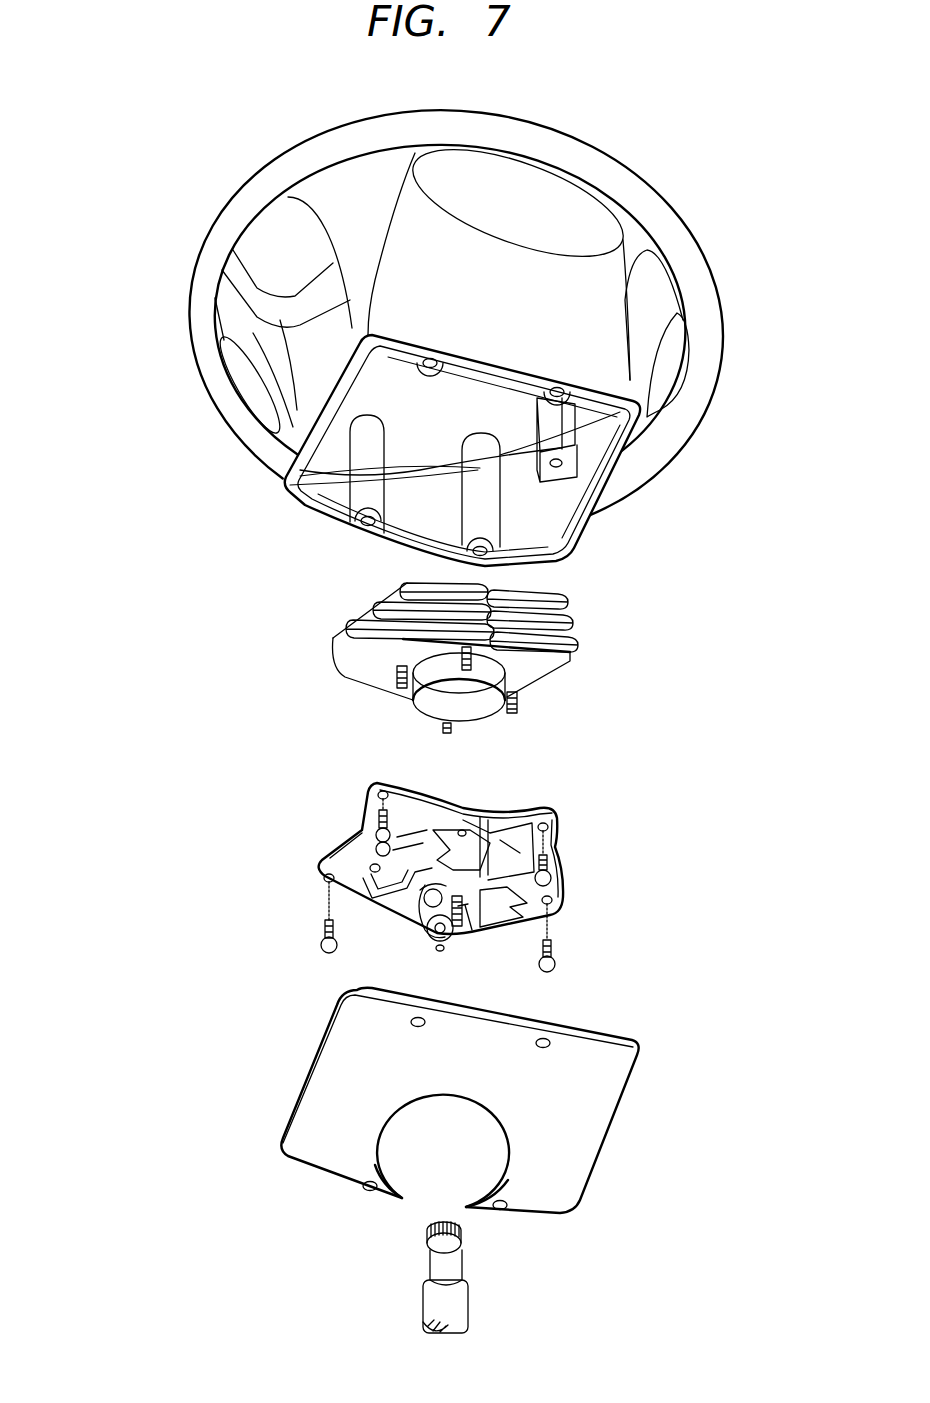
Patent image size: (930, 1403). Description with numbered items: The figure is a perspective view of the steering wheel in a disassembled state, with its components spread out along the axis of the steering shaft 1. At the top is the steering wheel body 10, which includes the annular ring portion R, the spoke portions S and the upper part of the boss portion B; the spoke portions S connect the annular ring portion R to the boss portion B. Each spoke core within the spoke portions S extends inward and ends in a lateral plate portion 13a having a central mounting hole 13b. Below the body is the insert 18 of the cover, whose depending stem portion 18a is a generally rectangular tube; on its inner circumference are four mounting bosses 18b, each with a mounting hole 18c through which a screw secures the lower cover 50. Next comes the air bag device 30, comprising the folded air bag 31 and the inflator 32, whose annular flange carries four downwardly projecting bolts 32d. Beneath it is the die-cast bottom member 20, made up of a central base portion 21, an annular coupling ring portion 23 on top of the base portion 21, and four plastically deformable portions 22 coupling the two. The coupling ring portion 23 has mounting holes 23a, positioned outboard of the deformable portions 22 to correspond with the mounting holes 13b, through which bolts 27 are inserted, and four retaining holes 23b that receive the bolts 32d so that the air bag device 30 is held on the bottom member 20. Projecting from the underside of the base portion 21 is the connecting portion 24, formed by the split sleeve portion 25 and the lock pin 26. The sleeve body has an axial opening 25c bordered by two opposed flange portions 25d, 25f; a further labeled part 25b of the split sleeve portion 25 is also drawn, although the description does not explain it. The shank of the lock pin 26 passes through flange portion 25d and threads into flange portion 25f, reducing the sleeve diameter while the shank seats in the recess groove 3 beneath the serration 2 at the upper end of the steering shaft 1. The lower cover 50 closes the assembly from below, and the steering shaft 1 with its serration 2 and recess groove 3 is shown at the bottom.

The annular ring portion R is at (599, 143).
The steering wheel body 10 is at (489, 289).
The spoke portions S is at (261, 282).
The boss portion B is at (522, 237).
The insert 18 is at (464, 417).
The stem portion 18a is at (430, 461).
The mounting bosses 18b is at (480, 468).
The mounting hole 18c is at (430, 355).
The lateral plate portion 13a is at (570, 452).
The mounting hole 13b is at (562, 468).
The air bag device 30 is at (456, 658).
The air bag 31 is at (568, 615).
The inflator 32 is at (425, 697).
The bolts 32d is at (397, 680).
The bottom member 20 is at (440, 892).
The central base portion 21 is at (483, 877).
The deformable portions 22 is at (380, 815).
The annular coupling ring portion 23 is at (352, 863).
The mounting holes 23a is at (320, 883).
The retaining holes 23b is at (395, 847).
The connecting portion 24 is at (437, 950).
The split sleeve portion 25 is at (476, 865).
The lever hook 25b is at (457, 933).
The opening 25c is at (477, 933).
The flange portion 25d is at (433, 885).
The flange portion 25f is at (470, 877).
The lock pin 26 is at (430, 903).
The bolts 27 is at (321, 939).
The lower cover 50 is at (583, 1153).
The steering shaft 1 is at (486, 1282).
The serration 2 is at (463, 1233).
The recess groove 3 is at (452, 1251).